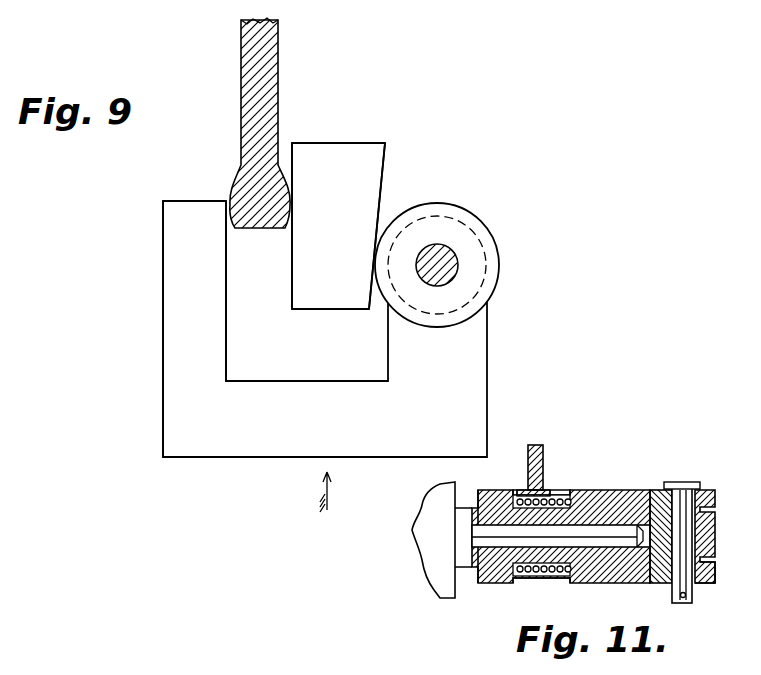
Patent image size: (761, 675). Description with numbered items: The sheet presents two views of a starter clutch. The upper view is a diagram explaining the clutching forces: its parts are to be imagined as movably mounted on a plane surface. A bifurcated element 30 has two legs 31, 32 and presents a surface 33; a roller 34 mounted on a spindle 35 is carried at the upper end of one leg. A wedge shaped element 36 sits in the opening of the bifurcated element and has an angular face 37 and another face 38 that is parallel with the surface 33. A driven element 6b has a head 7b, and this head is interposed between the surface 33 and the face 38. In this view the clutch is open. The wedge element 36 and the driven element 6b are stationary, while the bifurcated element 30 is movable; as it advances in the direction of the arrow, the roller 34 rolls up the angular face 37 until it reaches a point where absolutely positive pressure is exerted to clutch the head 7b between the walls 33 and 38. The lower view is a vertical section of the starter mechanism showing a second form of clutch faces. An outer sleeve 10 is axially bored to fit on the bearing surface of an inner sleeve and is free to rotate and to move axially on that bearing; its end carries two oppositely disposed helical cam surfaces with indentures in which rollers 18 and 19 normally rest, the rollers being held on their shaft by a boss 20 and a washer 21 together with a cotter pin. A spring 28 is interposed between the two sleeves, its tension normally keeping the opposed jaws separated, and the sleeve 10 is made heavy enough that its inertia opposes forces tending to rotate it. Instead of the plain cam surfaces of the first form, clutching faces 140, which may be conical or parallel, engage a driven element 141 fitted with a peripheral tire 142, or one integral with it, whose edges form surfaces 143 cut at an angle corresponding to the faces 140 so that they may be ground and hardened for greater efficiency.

In FIG. 9, the driven element 6b is at (280, 105).
In FIG. 9, the head 7b is at (230, 193).
In FIG. 9, the wedge shaped element 36 is at (337, 141).
In FIG. 9, the angular face 37 is at (386, 174).
In FIG. 9, the face 38 is at (292, 222).
In FIG. 9, the leg 31 is at (468, 346).
In FIG. 9, the leg 32 is at (163, 320).
In FIG. 9, the surface 33 is at (227, 290).
In FIG. 9, the bifurcated element 30 is at (288, 449).
In FIG. 9, the roller 34 is at (497, 236).
In FIG. 9, the spindle 35 is at (447, 253).
In FIG. 11, the sleeve 10 is at (640, 490).
In FIG. 11, the roller 18 is at (710, 585).
In FIG. 11, the roller 19 is at (712, 488).
In FIG. 11, the boss 20 is at (680, 482).
In FIG. 11, the washer 21 is at (672, 592).
In FIG. 11, the spring 28 is at (537, 572).
In FIG. 11, the cam faces 140 is at (512, 585).
In FIG. 11, the driven element 141 is at (543, 475).
In FIG. 11, the peripheral tire 142 is at (550, 492).
In FIG. 11, the surfaces 143 is at (517, 490).